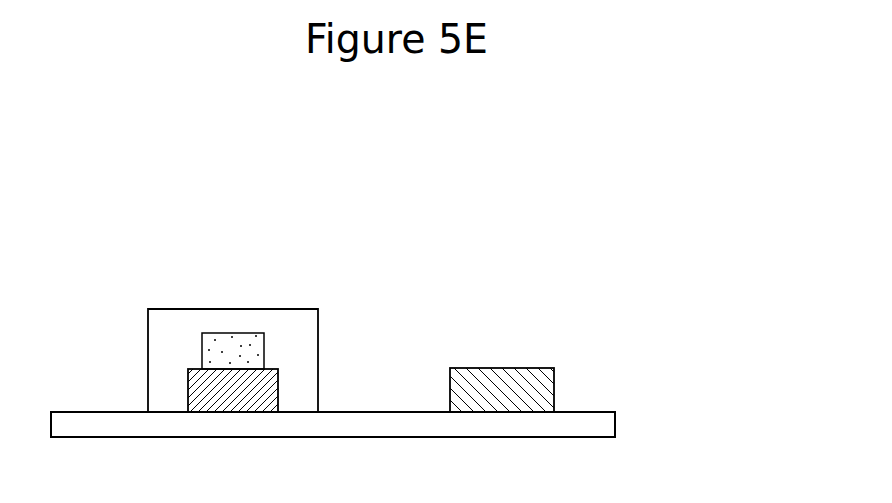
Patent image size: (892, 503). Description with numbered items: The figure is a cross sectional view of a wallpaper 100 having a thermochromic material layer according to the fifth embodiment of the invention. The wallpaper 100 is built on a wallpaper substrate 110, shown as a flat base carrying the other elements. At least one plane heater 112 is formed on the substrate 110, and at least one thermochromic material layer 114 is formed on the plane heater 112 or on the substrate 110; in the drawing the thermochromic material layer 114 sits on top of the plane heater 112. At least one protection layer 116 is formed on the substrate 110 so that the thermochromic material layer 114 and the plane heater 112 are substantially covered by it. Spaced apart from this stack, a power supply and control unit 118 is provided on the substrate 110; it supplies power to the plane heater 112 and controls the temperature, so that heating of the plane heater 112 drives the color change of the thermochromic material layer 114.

The wallpaper 100 is at (718, 188).
The wallpaper substrate 110 is at (617, 418).
The plane heater 112 is at (278, 387).
The thermochromic material layer 114 is at (264, 350).
The protection layer 116 is at (292, 309).
The power supply and control unit 118 is at (507, 368).